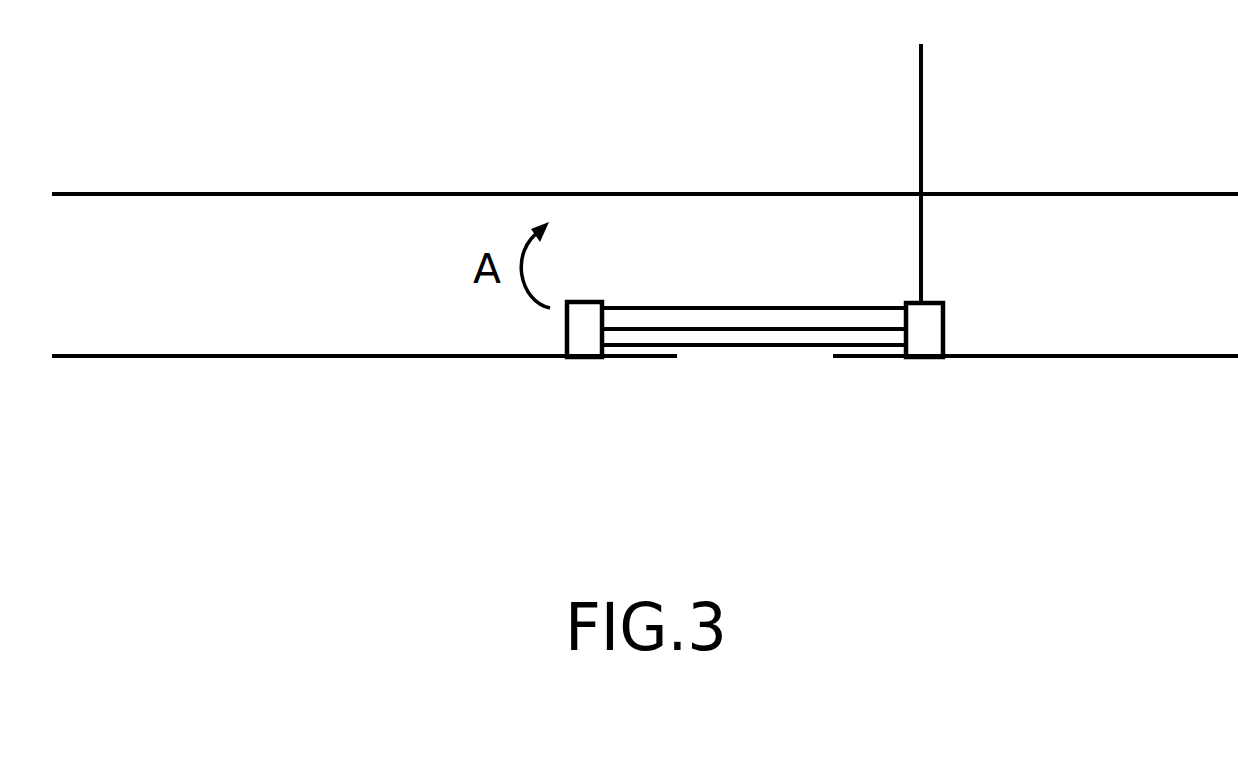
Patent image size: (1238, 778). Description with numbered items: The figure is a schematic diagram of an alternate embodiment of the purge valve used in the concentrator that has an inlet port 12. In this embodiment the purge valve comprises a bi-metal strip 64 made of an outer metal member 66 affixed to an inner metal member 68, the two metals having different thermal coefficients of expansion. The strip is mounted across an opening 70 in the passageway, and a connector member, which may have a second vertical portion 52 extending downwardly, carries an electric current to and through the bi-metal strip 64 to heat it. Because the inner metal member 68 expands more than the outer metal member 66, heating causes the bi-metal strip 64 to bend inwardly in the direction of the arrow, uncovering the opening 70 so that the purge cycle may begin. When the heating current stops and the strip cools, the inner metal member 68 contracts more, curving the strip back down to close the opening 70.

The inlet port 12 is at (113, 250).
The second vertical portion 52 is at (921, 172).
The bi-metal strip 64 is at (650, 308).
The outer metal member 66 is at (723, 329).
The inner metal member 68 is at (742, 345).
The opening 70 is at (700, 347).